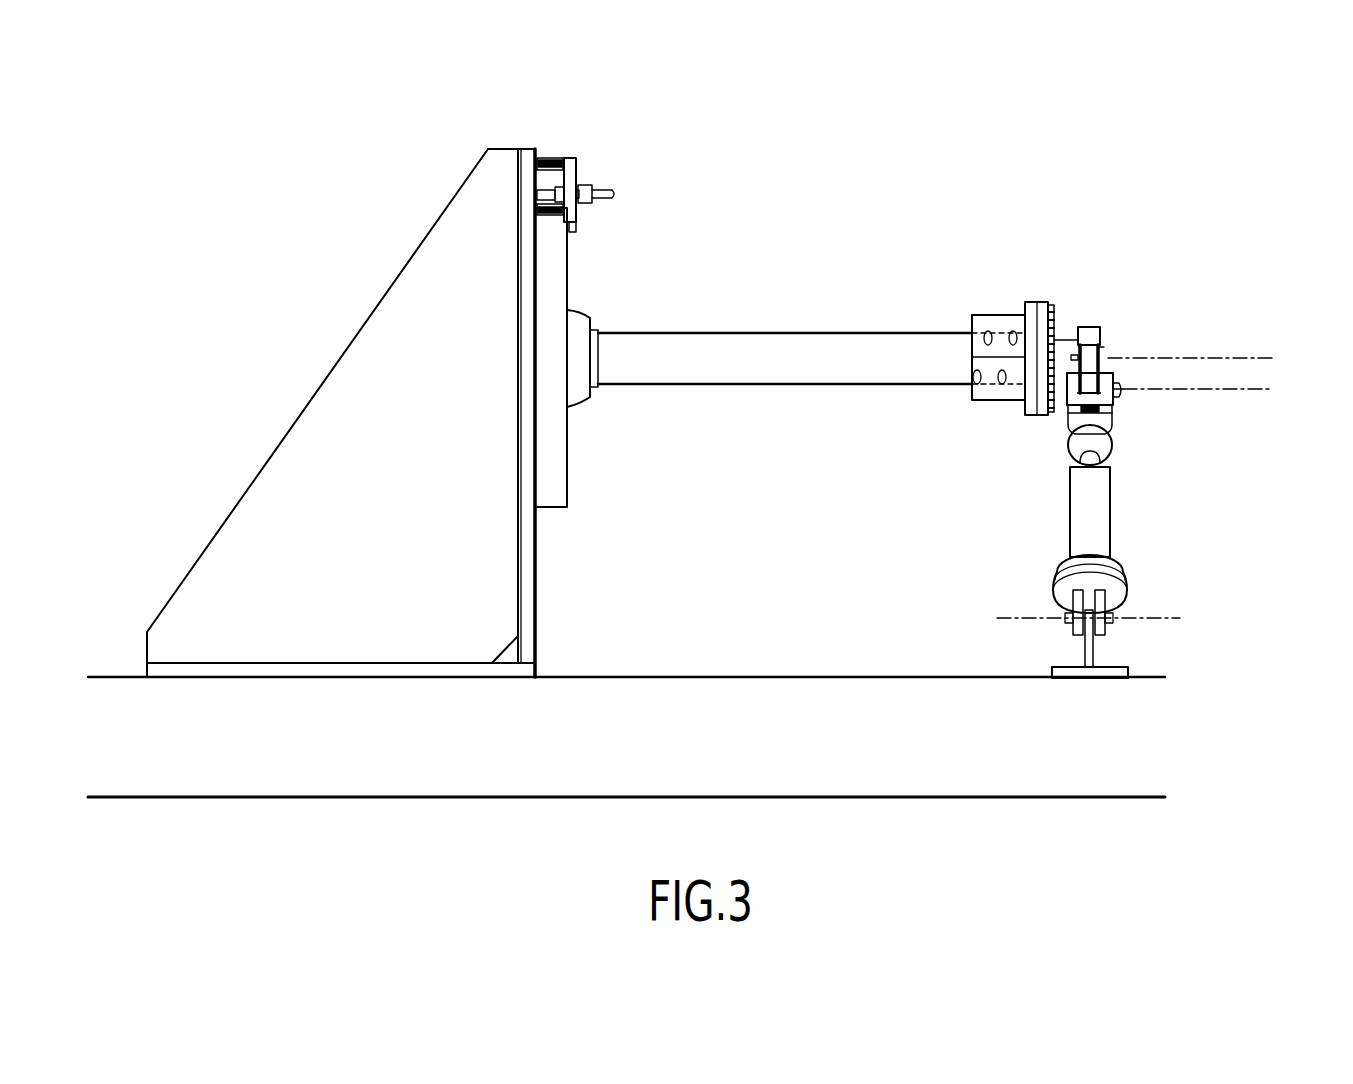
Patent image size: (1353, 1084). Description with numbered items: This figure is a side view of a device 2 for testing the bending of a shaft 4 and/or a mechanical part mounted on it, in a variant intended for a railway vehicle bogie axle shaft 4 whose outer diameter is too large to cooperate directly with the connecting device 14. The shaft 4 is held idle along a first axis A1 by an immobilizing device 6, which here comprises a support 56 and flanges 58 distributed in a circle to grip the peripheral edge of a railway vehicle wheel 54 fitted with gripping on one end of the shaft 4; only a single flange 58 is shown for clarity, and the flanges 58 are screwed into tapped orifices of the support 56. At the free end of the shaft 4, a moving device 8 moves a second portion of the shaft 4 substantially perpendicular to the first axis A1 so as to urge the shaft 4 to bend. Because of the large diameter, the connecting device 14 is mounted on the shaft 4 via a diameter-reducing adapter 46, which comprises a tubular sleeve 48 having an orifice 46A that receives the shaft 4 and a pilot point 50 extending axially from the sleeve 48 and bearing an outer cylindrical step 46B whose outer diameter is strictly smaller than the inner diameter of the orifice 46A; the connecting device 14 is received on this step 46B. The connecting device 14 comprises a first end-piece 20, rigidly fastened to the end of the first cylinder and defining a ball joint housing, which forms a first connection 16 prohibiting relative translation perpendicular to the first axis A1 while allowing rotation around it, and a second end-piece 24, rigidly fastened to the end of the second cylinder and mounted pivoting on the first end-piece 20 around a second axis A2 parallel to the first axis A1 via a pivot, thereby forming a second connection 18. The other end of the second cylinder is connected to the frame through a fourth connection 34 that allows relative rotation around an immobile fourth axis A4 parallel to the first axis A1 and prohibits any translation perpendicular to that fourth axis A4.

The device 2 is at (293, 203).
The shaft 4 is at (792, 343).
The immobilizing device 6 is at (447, 182).
The moving device 8 is at (1165, 543).
The connecting device 14 is at (1244, 334).
The first connection 16 is at (1139, 345).
The second connection 18 is at (1142, 373).
The first end-piece 20 is at (1097, 327).
The second end-piece 24 is at (1115, 418).
The fourth connection 34 is at (1053, 633).
The diameter-reducing adapter 46 is at (996, 298).
The orifice 46A is at (980, 380).
The outer cylindrical step 46B is at (1102, 347).
The tubular sleeve 48 is at (973, 315).
The pilot point 50 is at (1058, 340).
The railway vehicle wheel 54 is at (567, 263).
The support 56 is at (332, 416).
The flange 58 is at (572, 158).
The first axis A1 is at (1250, 358).
The second axis A2 is at (1252, 389).
The fourth axis A4 is at (1168, 620).